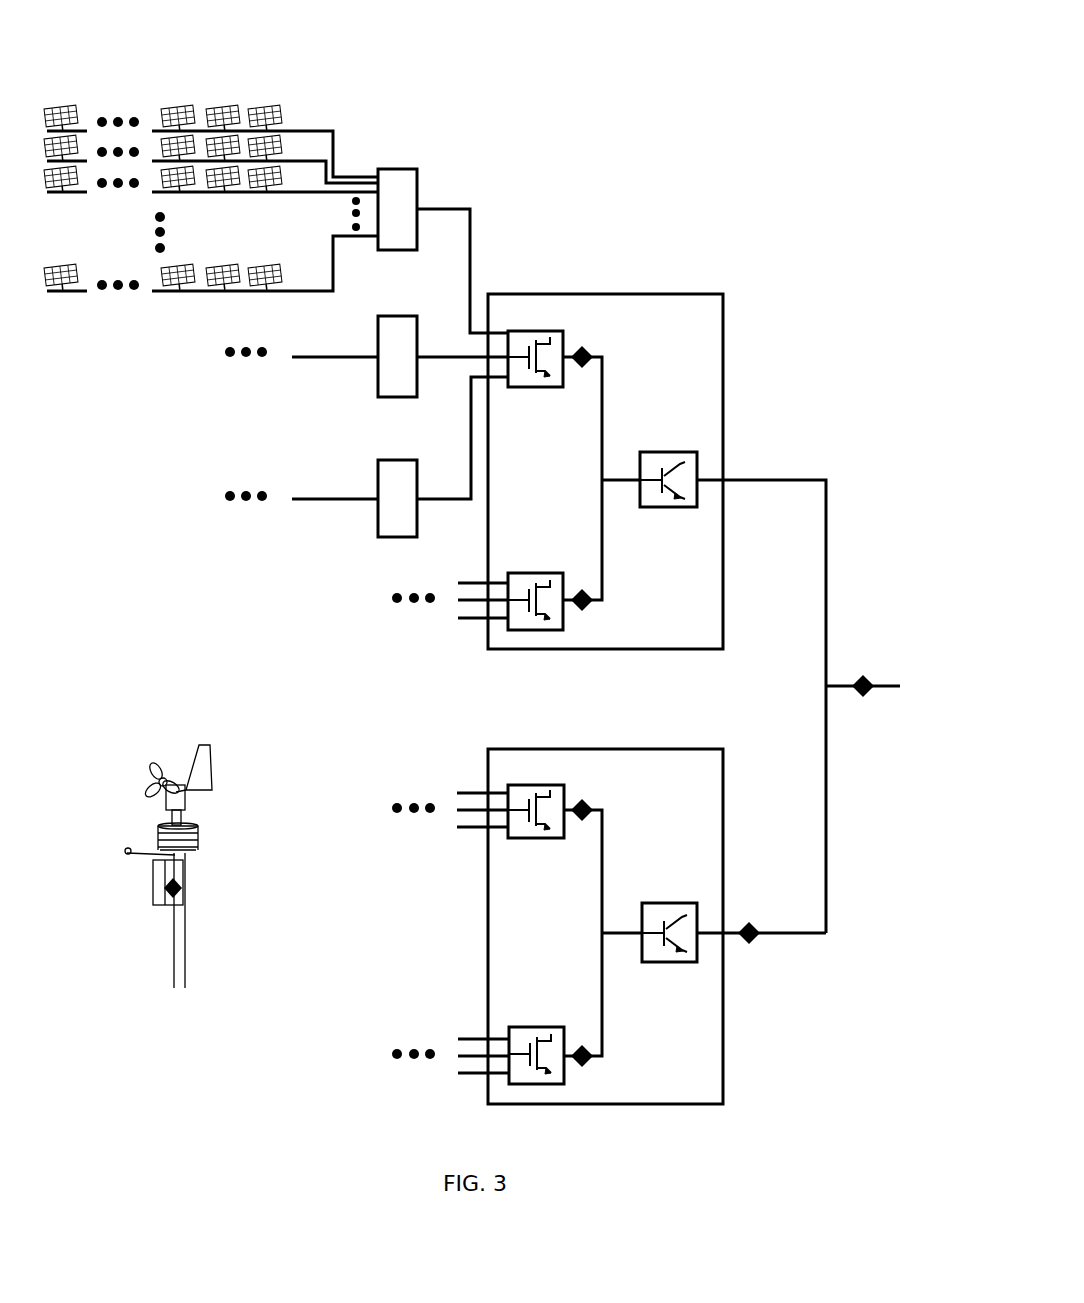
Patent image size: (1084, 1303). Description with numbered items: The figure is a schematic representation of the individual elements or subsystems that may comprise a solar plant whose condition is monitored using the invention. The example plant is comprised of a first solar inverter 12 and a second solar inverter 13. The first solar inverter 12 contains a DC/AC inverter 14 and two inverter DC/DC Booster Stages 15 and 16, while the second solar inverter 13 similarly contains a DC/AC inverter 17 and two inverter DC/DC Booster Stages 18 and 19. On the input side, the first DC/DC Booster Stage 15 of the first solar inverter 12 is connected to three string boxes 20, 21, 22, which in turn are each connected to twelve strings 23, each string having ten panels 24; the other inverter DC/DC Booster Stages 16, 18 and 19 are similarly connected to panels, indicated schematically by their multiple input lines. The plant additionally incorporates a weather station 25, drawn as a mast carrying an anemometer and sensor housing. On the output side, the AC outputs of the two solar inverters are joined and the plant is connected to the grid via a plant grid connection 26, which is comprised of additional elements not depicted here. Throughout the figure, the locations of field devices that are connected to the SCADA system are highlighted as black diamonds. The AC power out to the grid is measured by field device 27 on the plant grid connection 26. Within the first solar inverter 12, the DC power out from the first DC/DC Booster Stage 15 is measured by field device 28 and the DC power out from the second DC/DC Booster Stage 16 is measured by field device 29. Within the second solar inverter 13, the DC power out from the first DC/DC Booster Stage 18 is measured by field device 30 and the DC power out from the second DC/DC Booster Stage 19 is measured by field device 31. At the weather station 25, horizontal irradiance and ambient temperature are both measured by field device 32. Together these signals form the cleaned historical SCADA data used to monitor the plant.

The first solar inverter 12 is at (636, 573).
The second solar inverter 13 is at (640, 902).
The DC/AC inverter 14 is at (667, 458).
The inverter DC/DC Booster Stage 15 is at (520, 337).
The inverter DC/DC Booster Stage 16 is at (524, 621).
The DC/AC inverter 17 is at (668, 912).
The inverter DC/DC Booster Stage 18 is at (520, 792).
The inverter DC/DC Booster Stage 19 is at (530, 1077).
The string box 20 is at (403, 180).
The string box 21 is at (388, 377).
The string box 22 is at (388, 520).
The string 23 is at (320, 128).
The panel 24 is at (270, 104).
The weather station 25 is at (188, 831).
The plant grid connection 26 is at (898, 688).
The field device 27 is at (863, 675).
The field device 28 is at (586, 346).
The field device 29 is at (585, 610).
The field device 30 is at (586, 800).
The field device 31 is at (586, 1066).
The field device 32 is at (161, 902).